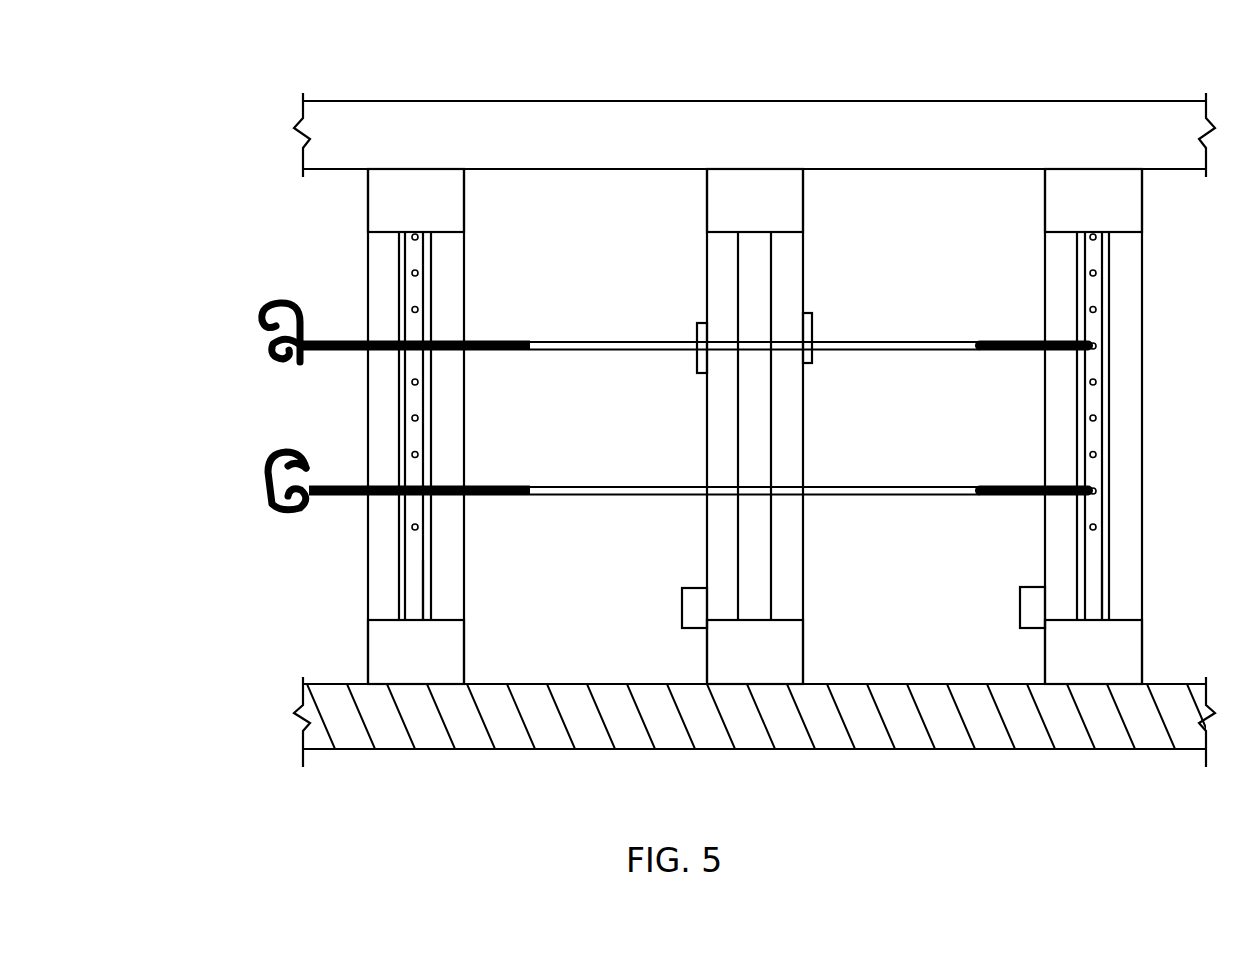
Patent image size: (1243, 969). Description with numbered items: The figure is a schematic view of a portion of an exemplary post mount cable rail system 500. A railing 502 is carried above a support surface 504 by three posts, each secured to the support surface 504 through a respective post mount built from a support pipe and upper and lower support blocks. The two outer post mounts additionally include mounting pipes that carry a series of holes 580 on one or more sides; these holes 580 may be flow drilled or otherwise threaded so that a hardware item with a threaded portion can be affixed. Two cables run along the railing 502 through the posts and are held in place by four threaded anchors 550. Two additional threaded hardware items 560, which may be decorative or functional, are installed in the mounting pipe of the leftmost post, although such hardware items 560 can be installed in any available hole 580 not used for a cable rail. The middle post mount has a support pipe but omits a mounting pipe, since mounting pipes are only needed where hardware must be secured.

The post mount cable rail system 500 is at (133, 56).
The railing 502 is at (714, 145).
The support surface 504 is at (714, 724).
The threaded anchor 550 is at (473, 352).
The threaded hardware item 560 is at (258, 348).
The hole 580 is at (412, 528).